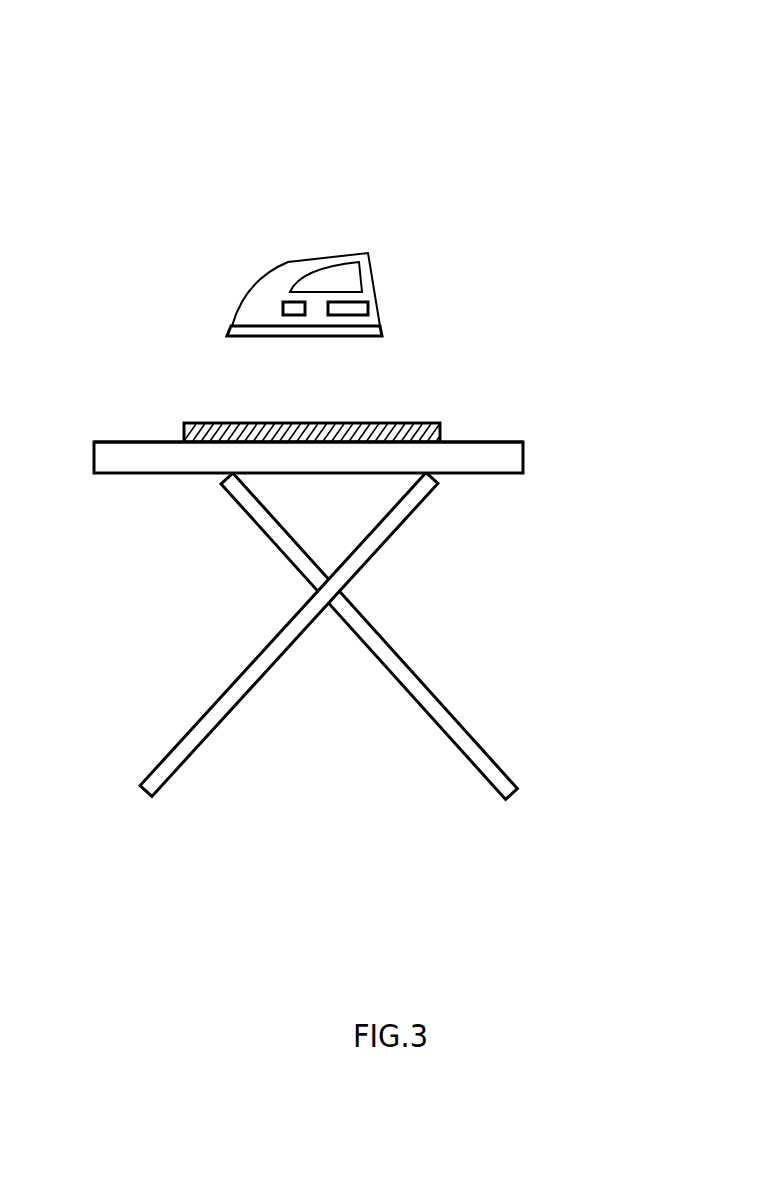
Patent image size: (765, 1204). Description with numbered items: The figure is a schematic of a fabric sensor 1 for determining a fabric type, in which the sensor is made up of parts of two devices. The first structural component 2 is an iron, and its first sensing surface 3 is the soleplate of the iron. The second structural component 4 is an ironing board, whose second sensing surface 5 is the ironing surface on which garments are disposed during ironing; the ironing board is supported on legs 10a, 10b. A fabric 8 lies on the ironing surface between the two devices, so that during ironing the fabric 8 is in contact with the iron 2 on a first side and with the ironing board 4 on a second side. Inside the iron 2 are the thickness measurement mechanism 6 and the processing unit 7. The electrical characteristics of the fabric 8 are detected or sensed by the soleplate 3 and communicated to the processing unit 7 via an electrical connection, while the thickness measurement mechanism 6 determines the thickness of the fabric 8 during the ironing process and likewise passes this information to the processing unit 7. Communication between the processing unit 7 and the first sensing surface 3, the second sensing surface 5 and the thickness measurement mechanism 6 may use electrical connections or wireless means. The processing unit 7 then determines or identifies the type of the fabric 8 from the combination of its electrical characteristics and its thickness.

The fabric sensor 1 is at (503, 111).
The first structural component 2 is at (248, 312).
The first sensing surface 3 is at (260, 336).
The second structural component 4 is at (463, 463).
The second sensing surface 5 is at (122, 442).
The thickness measurement mechanism 6 is at (287, 302).
The processing unit 7 is at (368, 310).
The fabric 8 is at (440, 433).
The leg 10a is at (233, 707).
The leg 10b is at (467, 732).